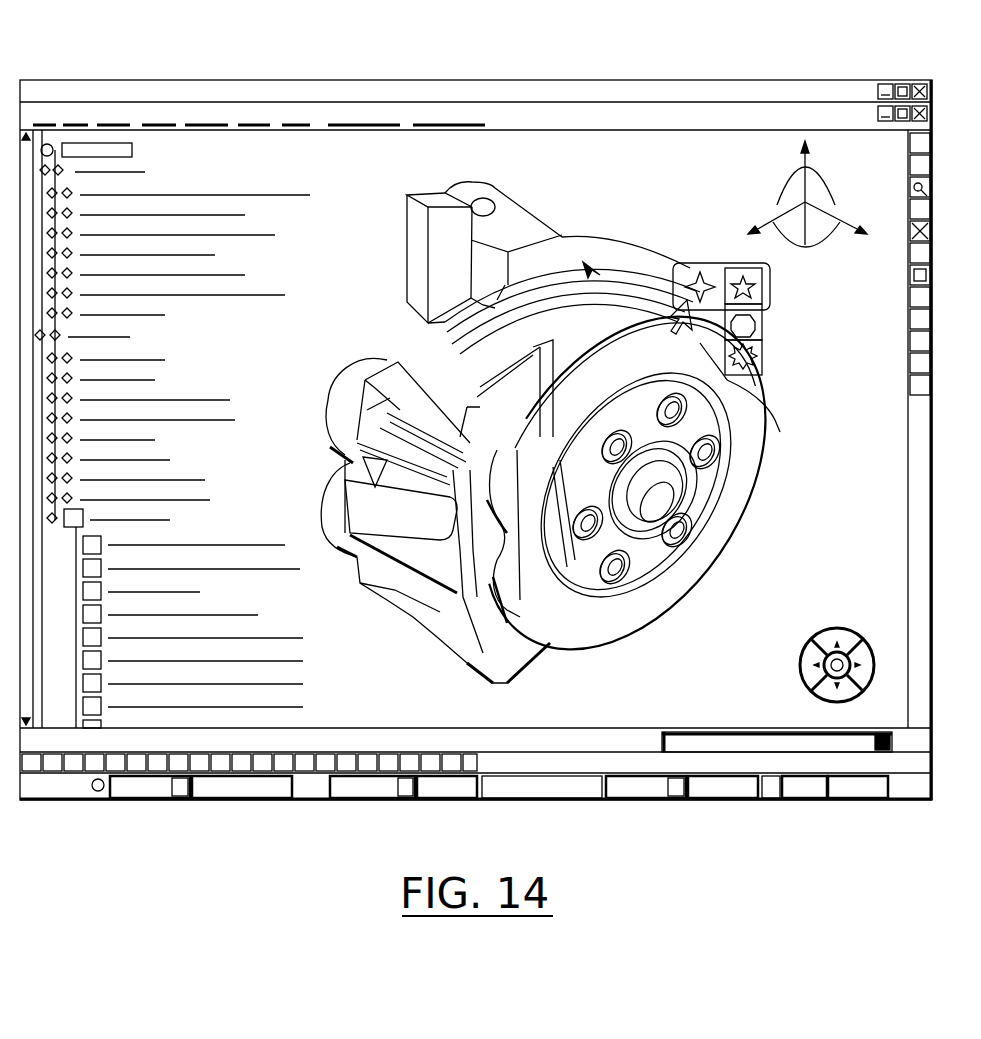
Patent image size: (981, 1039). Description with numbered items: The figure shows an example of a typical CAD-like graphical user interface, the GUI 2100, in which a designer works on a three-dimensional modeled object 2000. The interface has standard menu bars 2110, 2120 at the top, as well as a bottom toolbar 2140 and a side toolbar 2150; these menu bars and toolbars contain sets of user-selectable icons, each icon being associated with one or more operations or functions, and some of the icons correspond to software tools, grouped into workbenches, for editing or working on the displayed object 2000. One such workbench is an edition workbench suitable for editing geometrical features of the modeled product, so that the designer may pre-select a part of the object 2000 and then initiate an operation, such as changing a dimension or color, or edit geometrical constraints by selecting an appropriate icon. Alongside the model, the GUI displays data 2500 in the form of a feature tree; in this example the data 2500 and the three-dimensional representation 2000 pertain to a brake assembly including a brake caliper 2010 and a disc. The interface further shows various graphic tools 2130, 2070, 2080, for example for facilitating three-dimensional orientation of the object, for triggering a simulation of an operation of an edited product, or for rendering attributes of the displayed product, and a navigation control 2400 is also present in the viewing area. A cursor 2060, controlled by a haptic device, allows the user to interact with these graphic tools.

The 3D modeled object 2000 is at (366, 254).
The brake caliper 2010 is at (427, 363).
The cursor 2060 is at (758, 382).
The graphic tool 2070 is at (706, 268).
The graphic tool 2080 is at (763, 335).
The GUI 2100 is at (741, 655).
The menu bar 2110 is at (588, 86).
The menu bar 2120 is at (677, 126).
The graphic tool 2130 is at (823, 237).
The bottom toolbar 2140 is at (492, 740).
The side toolbar 2150 is at (912, 420).
The compass navigation control 2400 is at (829, 620).
The data 2500 is at (150, 410).